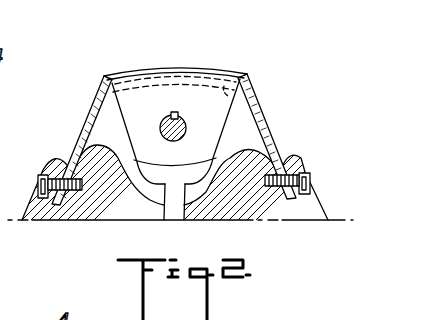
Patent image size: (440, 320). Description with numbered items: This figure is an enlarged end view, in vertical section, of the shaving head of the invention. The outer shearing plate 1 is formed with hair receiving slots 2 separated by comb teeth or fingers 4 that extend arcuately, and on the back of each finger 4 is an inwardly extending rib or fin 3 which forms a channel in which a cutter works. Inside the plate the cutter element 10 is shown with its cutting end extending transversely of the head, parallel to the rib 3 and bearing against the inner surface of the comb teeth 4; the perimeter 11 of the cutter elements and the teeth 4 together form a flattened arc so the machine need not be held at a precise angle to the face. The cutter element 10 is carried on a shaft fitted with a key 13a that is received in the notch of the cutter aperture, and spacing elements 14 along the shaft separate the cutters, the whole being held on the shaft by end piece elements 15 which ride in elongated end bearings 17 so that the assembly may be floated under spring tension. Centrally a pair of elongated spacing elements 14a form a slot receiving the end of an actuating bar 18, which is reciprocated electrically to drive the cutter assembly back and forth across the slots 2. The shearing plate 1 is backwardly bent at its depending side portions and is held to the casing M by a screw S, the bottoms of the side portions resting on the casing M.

The shearing plate 1 is at (268, 118).
The hair receiving slots 2 is at (196, 68).
The rib or fin 3 is at (130, 82).
The comb teeth or fingers 4 is at (168, 69).
The cutter element 10 is at (218, 99).
The perimeter of the cutter elements 11 is at (147, 69).
The key 13a is at (172, 114).
The spacing element 14 is at (223, 74).
The elongated spacing elements 14a is at (198, 176).
The actuating bar 18 is at (173, 206).
The casing M is at (92, 205).
The screw S is at (312, 172).
The elongated end bearings 17 is at (129, 192).
The end piece elements 15 is at (10, 104).